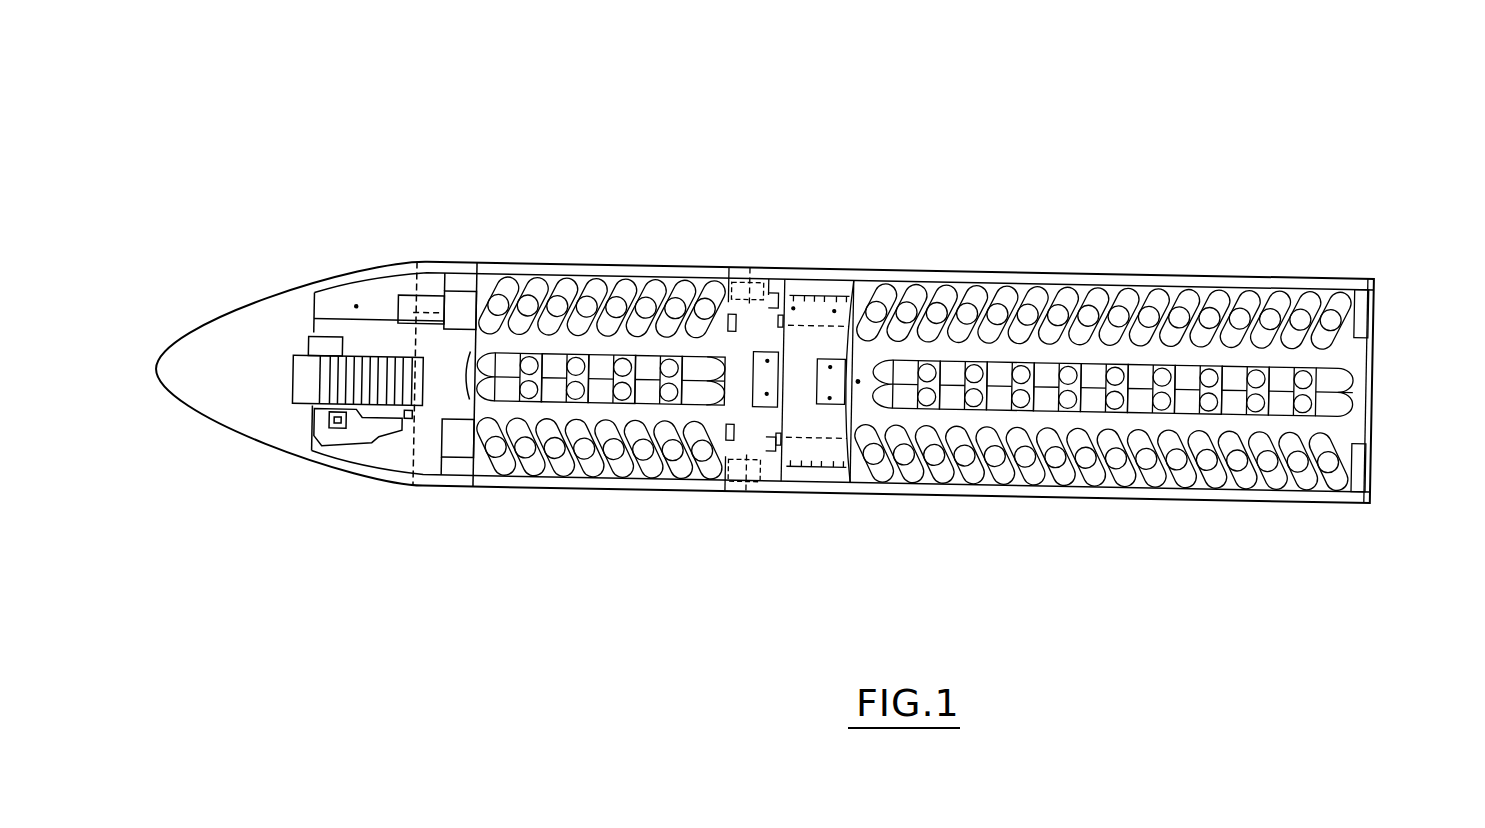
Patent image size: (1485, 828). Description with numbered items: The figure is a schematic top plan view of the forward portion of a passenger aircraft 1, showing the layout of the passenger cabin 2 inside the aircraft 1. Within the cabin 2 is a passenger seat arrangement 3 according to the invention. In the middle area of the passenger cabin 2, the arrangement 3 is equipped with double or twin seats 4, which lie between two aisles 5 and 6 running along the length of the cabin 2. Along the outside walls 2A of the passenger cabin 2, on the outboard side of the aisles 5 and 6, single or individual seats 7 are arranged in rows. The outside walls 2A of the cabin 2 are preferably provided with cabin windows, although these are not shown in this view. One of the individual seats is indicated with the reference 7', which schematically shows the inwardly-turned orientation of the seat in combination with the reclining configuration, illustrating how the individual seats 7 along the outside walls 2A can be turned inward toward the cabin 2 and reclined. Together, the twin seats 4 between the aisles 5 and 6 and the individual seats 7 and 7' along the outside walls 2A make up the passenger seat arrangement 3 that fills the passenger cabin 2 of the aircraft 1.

The passenger aircraft 1 is at (330, 503).
The passenger cabin 2 is at (758, 445).
The outside walls 2A is at (1146, 283).
The passenger seat arrangement 3 is at (542, 228).
The double or twin seats 4 is at (1345, 403).
The aisle 5 is at (1345, 353).
The aisle 6 is at (1333, 428).
The single or individual seats 7 is at (999, 245).
The inwardly-turned reclining seat configuration 7' is at (676, 237).